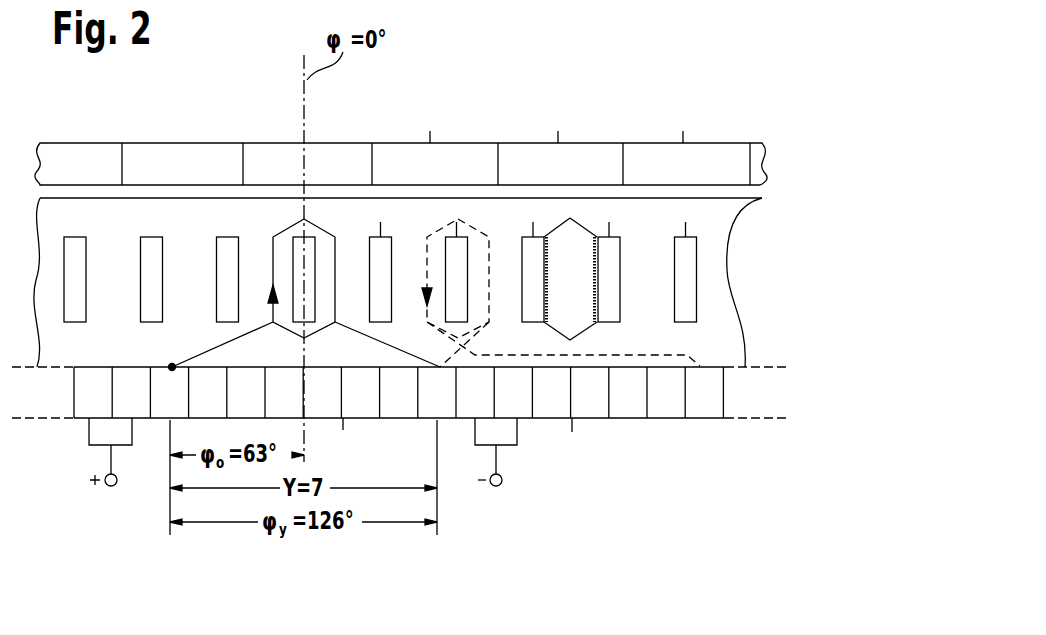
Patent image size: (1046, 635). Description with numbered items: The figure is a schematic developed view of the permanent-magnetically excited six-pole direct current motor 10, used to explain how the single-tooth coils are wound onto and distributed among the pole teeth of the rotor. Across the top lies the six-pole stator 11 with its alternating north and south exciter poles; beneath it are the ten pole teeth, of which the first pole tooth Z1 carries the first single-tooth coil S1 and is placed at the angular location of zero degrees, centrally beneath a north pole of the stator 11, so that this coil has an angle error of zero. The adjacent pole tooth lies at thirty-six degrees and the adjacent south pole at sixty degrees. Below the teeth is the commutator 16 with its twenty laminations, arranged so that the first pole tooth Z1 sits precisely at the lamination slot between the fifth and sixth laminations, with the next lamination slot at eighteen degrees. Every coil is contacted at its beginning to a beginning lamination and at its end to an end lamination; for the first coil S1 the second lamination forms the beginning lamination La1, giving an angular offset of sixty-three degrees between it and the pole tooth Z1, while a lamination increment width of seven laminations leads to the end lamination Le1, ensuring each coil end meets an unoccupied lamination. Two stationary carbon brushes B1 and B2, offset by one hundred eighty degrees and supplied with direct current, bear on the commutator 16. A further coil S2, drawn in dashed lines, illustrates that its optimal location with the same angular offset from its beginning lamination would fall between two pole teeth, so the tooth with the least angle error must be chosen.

The direct current motor 10 is at (634, 79).
The stator 11 is at (733, 153).
The commutator 16 is at (604, 418).
The first pole tooth Z1 is at (305, 246).
The first single-tooth coil S1 is at (296, 224).
The second coil S2 is at (477, 224).
The first carbon brush B1 is at (101, 437).
The second carbon brush B2 is at (510, 442).
The beginning lamination La1 is at (159, 420).
The end lamination Le1 is at (450, 420).